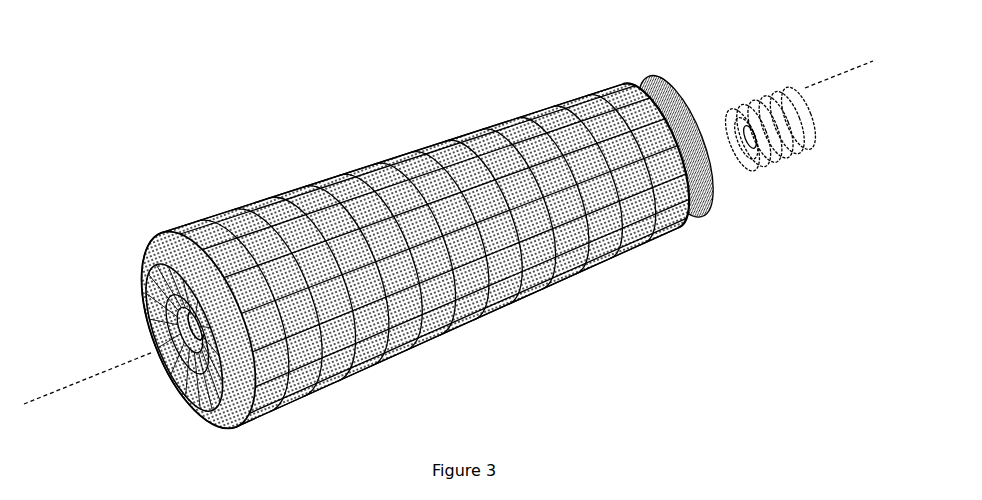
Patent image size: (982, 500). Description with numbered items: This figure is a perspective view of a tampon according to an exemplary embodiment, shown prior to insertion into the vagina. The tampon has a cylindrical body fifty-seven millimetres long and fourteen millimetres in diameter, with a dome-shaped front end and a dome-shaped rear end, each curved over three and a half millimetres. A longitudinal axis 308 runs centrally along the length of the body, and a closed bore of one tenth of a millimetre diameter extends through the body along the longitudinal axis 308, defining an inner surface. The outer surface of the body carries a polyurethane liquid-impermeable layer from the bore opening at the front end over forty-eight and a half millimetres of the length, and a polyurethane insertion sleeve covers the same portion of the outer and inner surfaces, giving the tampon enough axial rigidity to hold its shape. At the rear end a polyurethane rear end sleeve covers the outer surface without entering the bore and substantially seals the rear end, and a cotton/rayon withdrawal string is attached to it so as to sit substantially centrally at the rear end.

The longitudinal axis 308 is at (827, 84).